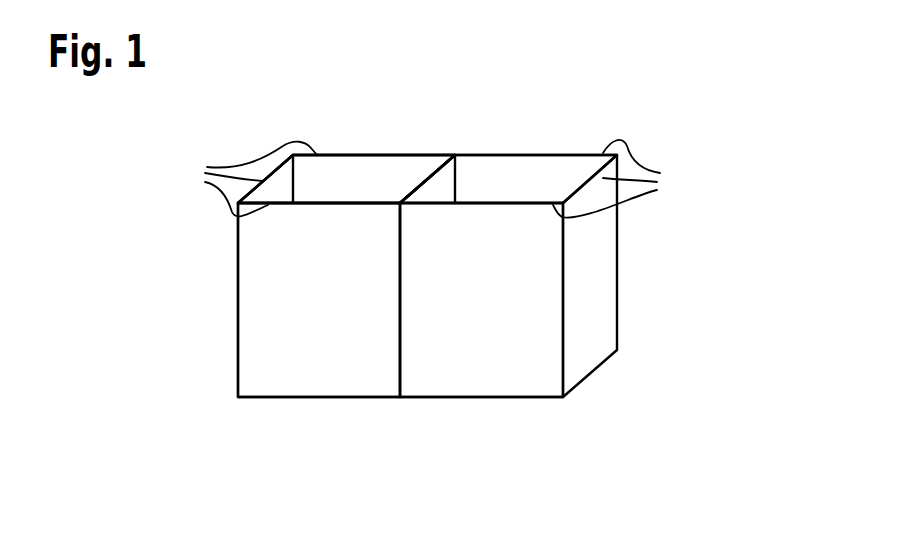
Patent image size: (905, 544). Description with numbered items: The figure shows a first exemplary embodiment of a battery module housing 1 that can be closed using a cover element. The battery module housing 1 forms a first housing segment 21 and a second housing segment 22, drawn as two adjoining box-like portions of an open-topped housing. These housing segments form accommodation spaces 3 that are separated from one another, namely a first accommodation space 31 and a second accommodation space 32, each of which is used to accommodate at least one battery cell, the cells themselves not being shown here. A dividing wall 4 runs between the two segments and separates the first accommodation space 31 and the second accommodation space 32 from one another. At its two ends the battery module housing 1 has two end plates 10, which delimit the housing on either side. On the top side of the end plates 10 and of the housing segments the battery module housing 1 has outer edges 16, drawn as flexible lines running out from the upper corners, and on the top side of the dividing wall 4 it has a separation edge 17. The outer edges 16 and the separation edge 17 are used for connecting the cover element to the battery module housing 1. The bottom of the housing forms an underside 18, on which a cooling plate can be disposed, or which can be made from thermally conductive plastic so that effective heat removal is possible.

The battery module housing 1 is at (232, 443).
The accommodation spaces 3 is at (350, 185).
The first accommodation space 31 is at (346, 179).
The second accommodation space 32 is at (537, 185).
The dividing wall 4 is at (443, 188).
The end plates 10 is at (238, 307).
The outer edges 16 is at (433, 179).
The separation edge 17 is at (447, 188).
The underside 18 is at (573, 428).
The first housing segment 21 is at (320, 388).
The second housing segment 22 is at (470, 388).